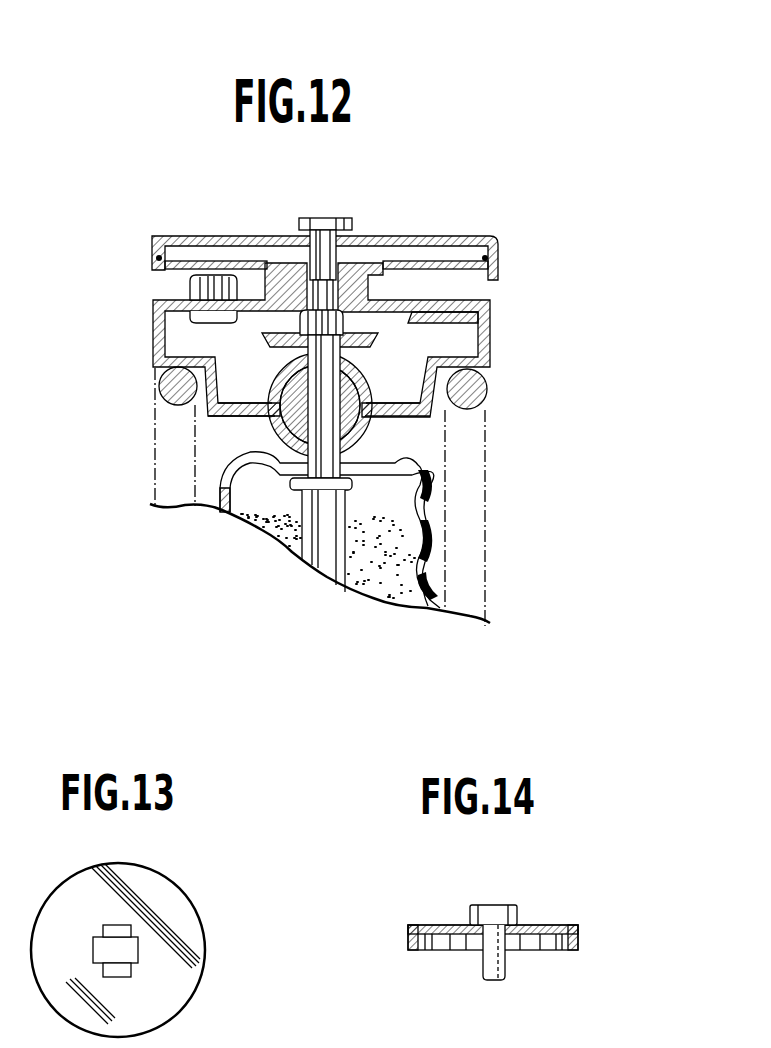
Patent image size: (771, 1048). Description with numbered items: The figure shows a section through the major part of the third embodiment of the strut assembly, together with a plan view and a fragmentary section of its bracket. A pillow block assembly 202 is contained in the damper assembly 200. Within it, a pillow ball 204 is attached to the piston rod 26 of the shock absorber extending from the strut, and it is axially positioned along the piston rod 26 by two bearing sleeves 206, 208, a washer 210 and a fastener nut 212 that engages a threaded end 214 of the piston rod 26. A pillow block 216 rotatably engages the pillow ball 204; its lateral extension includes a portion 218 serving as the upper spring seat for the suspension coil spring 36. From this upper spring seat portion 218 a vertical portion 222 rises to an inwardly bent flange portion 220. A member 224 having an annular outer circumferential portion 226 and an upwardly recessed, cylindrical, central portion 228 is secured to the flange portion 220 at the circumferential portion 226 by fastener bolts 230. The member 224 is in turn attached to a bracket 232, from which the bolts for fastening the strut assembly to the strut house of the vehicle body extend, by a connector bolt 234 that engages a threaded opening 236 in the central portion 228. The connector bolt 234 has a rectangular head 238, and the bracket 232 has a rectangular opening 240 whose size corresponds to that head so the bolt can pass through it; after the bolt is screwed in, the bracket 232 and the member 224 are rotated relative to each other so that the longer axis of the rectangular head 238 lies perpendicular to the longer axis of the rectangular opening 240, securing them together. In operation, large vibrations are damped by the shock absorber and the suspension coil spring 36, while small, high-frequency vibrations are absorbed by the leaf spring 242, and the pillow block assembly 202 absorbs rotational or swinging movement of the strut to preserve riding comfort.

In FIG. 12, the damper assembly 200 is at (492, 345).
In FIG. 12, the pillow block assembly 202 is at (258, 429).
In FIG. 12, the pillow ball 204 is at (360, 433).
In FIG. 12, the bearing sleeve 206 is at (346, 356).
In FIG. 12, the bearing sleeve 208 is at (348, 468).
In FIG. 12, the washer 210 is at (282, 355).
In FIG. 12, the fastener nut 212 is at (270, 322).
In FIG. 12, the threaded end 214 is at (308, 298).
In FIG. 12, the pillow block 216 is at (364, 392).
In FIG. 12, the upper spring seat portion 218 is at (432, 420).
In FIG. 12, the inwardly bent flange portion 220 is at (445, 322).
In FIG. 12, the vertical portion 222 is at (490, 357).
In FIG. 12, the member 224 is at (150, 302).
In FIG. 12, the annular outer circumferential portion 226 is at (462, 303).
In FIG. 12, the upwardly recessed cylindrical central portion 228 is at (384, 303).
In FIG. 12, the fastener bolt 230 is at (190, 285).
In FIG. 12, the bracket 232 is at (188, 237).
In FIG. 13, the bracket 232 is at (197, 946).
In FIG. 14, the bracket 232 is at (552, 930).
In FIG. 12, the connector bolt 234 is at (328, 217).
In FIG. 13, the connector bolt 234 is at (142, 944).
In FIG. 14, the connector bolt 234 is at (505, 963).
In FIG. 12, the threaded opening 236 is at (338, 282).
In FIG. 13, the rectangular head 238 is at (93, 957).
In FIG. 14, the rectangular head 238 is at (500, 905).
In FIG. 13, the rectangular opening 240 is at (125, 976).
In FIG. 14, the rectangular opening 240 is at (484, 945).
In FIG. 12, the leaf spring 242 is at (262, 262).
In FIG. 12, the suspension coil spring 36 is at (478, 420).
In FIG. 12, the piston rod 26 is at (332, 548).